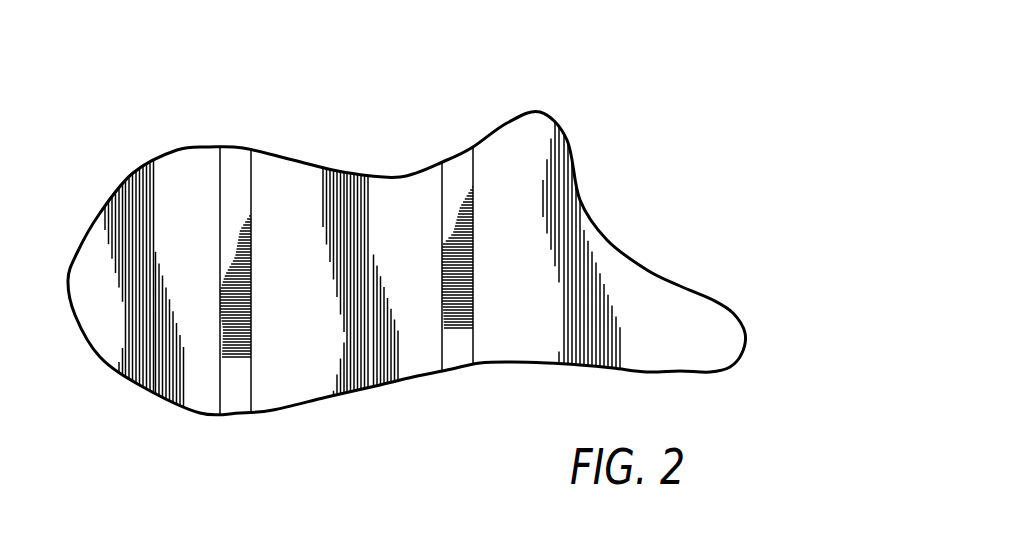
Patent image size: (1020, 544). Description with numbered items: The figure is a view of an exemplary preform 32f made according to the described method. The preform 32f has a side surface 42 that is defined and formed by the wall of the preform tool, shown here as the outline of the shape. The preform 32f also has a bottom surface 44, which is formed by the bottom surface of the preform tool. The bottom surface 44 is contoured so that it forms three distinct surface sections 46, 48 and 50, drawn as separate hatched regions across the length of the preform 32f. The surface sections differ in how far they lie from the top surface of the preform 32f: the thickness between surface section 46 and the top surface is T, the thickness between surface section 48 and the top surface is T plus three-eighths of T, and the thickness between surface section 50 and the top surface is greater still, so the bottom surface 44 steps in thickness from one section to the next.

The preform 32f is at (607, 240).
The side surface 42 is at (207, 148).
The bottom surface 44 is at (108, 330).
The surface section 46 is at (114, 257).
The surface section 48 is at (298, 170).
The surface section 50 is at (557, 178).